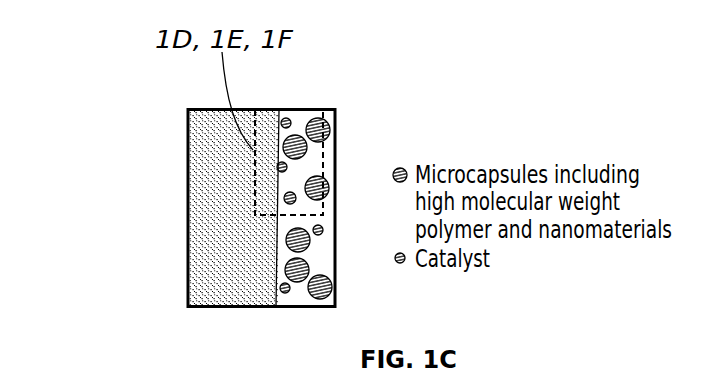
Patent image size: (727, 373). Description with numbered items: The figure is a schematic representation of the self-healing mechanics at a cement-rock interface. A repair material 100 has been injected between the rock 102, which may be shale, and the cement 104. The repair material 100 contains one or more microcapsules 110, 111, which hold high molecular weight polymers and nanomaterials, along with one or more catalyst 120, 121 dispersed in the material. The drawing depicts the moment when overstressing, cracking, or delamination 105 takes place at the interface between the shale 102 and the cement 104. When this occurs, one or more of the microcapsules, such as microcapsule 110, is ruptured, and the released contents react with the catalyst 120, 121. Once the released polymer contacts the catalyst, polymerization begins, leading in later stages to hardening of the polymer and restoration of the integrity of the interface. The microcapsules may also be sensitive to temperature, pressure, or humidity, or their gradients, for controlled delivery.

The repair material 100 is at (328, 161).
The rock 102 is at (260, 298).
The cement 104 is at (210, 193).
The delamination 105 is at (295, 145).
The microcapsule 110 is at (330, 130).
The microcapsule 111 is at (298, 118).
The catalyst 120 is at (283, 121).
The catalyst 121 is at (282, 170).